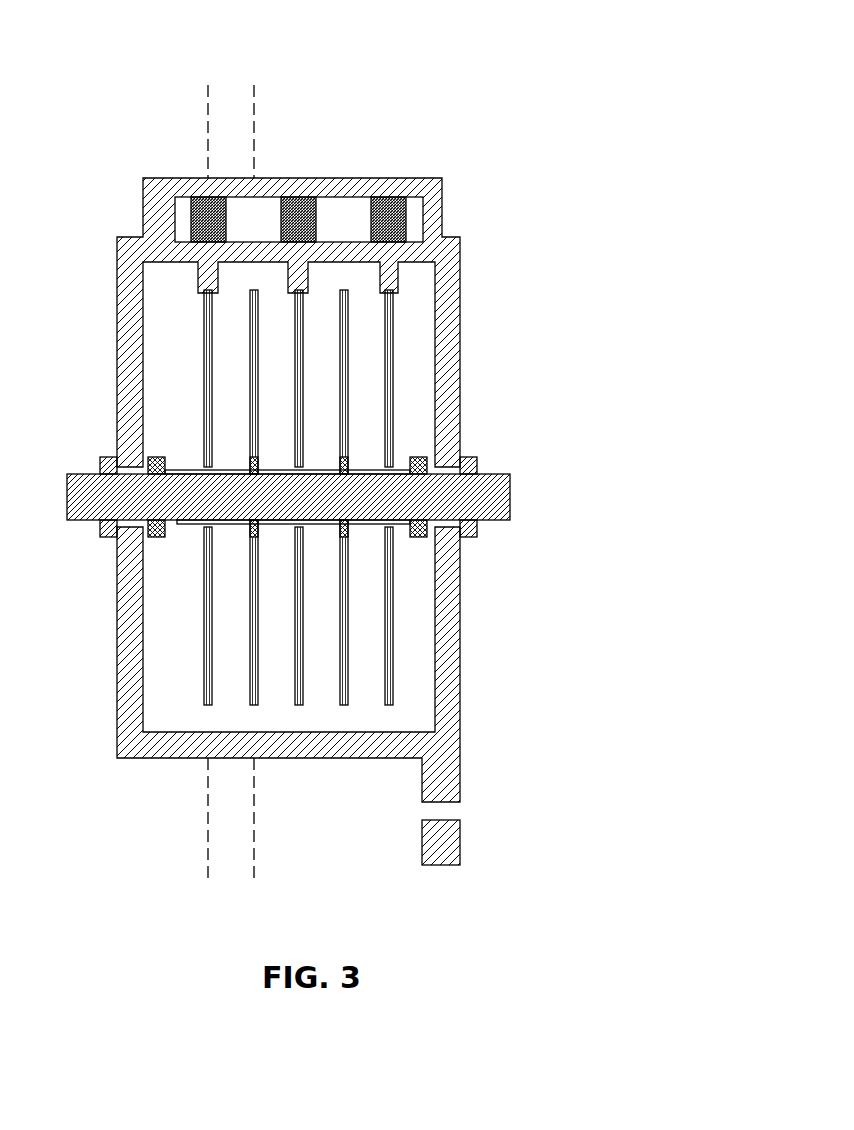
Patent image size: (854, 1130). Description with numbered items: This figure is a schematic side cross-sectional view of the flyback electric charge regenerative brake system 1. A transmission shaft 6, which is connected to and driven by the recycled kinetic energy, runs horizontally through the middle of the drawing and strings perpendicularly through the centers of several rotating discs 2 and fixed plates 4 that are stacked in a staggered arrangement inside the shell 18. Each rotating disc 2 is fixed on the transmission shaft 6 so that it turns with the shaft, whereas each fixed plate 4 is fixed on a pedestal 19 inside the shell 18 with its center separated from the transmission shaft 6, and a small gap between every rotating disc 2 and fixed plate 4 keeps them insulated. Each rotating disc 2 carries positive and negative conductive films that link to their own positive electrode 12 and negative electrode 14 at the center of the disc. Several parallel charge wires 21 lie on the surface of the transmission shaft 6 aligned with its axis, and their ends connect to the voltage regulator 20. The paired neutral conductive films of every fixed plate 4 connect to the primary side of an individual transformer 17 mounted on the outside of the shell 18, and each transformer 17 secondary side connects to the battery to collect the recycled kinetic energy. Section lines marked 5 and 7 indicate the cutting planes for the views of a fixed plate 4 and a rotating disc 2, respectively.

The flyback electric charge regenerative brake system 1 is at (400, 68).
The rotating disc 2 is at (247, 375).
The fixed plate 4 is at (292, 355).
The section line 5 is at (205, 90).
The transmission shaft 6 is at (65, 497).
The section line 7 is at (257, 90).
The positive electrode 12 is at (246, 462).
The negative electrode 14 is at (244, 533).
The transformer 17 is at (194, 193).
The shell 18 is at (114, 253).
The pedestal 19 is at (196, 277).
The voltage regulator 20 is at (147, 452).
The charge wire 21 is at (184, 465).